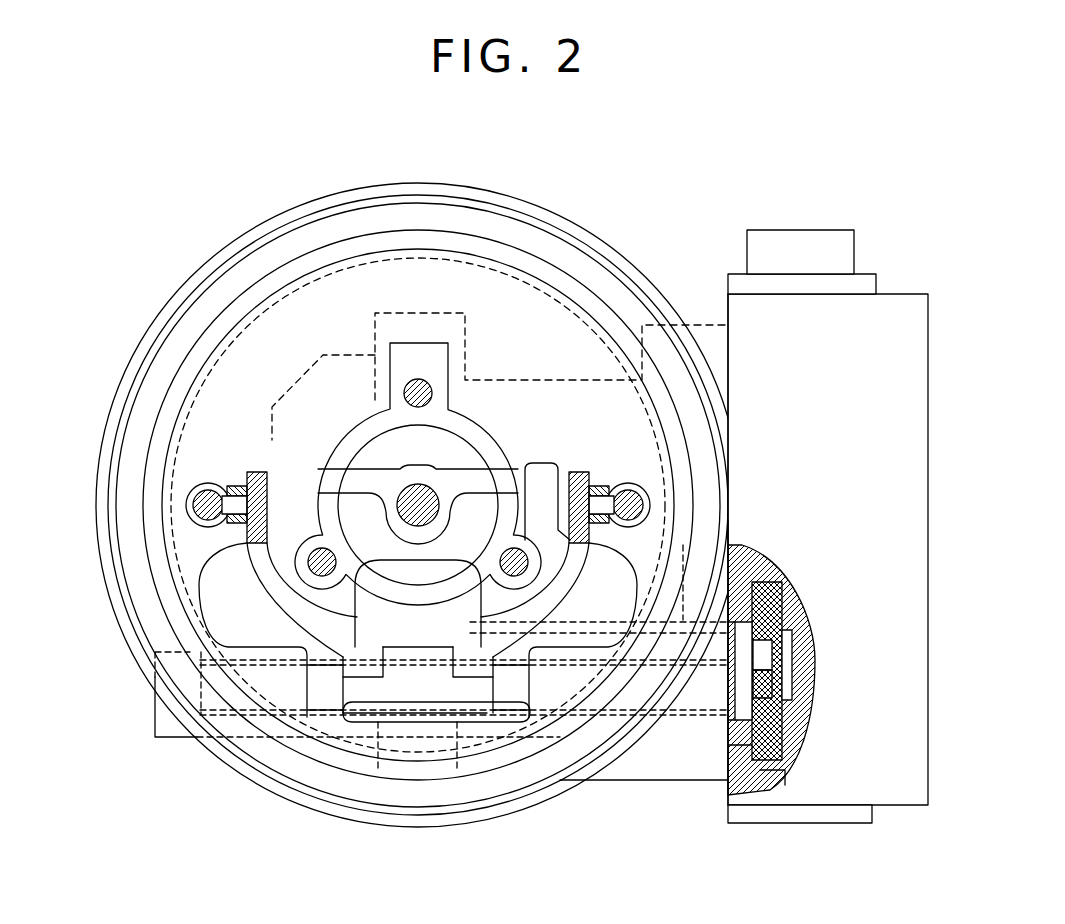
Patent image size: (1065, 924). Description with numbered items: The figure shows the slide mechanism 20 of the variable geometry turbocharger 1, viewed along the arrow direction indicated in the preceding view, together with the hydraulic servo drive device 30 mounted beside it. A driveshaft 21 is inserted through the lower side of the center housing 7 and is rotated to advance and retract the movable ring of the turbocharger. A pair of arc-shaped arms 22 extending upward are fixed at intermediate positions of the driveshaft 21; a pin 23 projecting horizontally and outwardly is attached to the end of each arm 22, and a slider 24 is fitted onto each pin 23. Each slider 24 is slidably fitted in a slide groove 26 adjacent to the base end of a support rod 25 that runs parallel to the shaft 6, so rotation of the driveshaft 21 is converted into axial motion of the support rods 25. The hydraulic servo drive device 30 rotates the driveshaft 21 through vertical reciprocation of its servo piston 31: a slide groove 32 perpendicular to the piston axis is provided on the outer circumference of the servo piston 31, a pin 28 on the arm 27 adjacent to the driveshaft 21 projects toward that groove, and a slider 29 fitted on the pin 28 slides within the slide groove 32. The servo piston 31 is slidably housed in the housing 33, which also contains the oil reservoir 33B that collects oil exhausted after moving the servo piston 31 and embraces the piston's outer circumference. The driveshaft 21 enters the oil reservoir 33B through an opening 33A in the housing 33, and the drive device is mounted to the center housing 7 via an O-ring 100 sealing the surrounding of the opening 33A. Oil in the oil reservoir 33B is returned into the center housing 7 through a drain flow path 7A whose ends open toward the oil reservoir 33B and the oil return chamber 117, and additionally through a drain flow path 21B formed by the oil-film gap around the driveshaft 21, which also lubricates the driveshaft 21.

The variable geometry turbocharger 1 is at (624, 147).
The center housing 7 is at (481, 194).
The drain flow path 7A is at (733, 522).
The shaft 6 is at (418, 484).
The slide mechanism 20 is at (404, 675).
The driveshaft 21 is at (515, 702).
The drain flow path 21B is at (555, 638).
The arc-shaped arm 22 is at (290, 603).
The pin 23 is at (255, 505).
The slider 24 is at (233, 488).
The support rod 25 is at (212, 517).
The slide groove 26 is at (232, 530).
The arm 27 is at (727, 685).
The pin 28 is at (762, 653).
The slider 29 is at (762, 637).
The hydraulic servo drive device 30 is at (950, 286).
The servo piston 31 is at (773, 743).
The slide groove 32 is at (767, 683).
The housing 33 is at (905, 440).
The opening 33A is at (723, 722).
The oil reservoir 33B is at (737, 597).
The O-ring 100 is at (728, 545).
The oil return chamber 117 is at (472, 600).